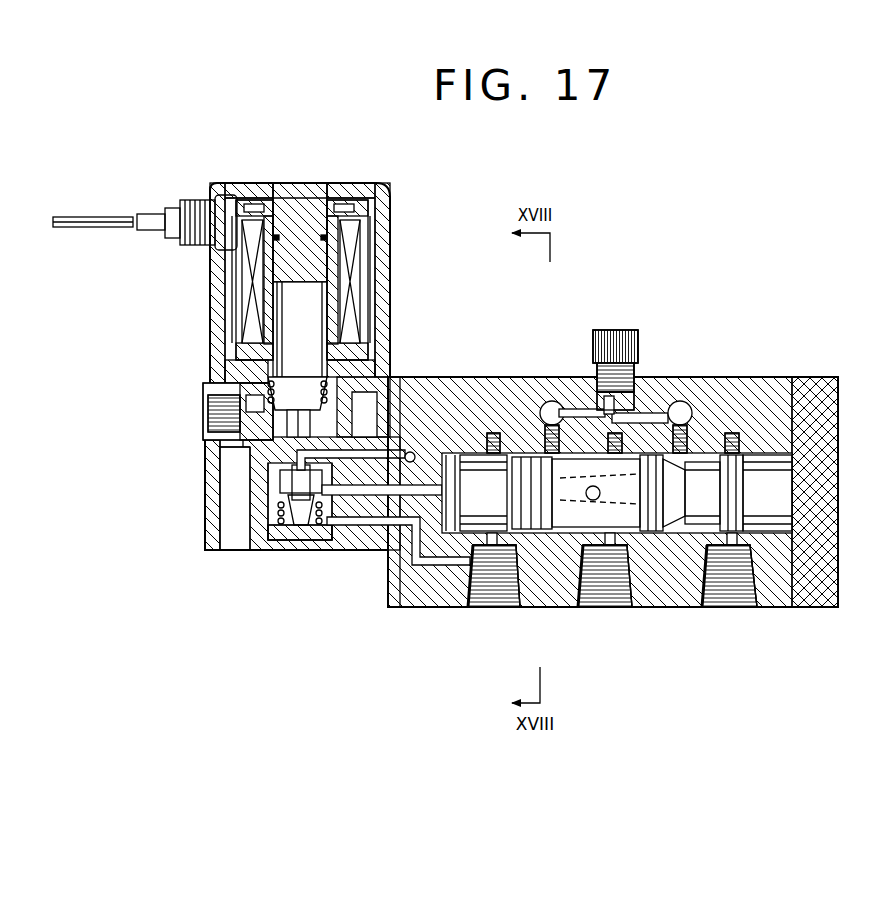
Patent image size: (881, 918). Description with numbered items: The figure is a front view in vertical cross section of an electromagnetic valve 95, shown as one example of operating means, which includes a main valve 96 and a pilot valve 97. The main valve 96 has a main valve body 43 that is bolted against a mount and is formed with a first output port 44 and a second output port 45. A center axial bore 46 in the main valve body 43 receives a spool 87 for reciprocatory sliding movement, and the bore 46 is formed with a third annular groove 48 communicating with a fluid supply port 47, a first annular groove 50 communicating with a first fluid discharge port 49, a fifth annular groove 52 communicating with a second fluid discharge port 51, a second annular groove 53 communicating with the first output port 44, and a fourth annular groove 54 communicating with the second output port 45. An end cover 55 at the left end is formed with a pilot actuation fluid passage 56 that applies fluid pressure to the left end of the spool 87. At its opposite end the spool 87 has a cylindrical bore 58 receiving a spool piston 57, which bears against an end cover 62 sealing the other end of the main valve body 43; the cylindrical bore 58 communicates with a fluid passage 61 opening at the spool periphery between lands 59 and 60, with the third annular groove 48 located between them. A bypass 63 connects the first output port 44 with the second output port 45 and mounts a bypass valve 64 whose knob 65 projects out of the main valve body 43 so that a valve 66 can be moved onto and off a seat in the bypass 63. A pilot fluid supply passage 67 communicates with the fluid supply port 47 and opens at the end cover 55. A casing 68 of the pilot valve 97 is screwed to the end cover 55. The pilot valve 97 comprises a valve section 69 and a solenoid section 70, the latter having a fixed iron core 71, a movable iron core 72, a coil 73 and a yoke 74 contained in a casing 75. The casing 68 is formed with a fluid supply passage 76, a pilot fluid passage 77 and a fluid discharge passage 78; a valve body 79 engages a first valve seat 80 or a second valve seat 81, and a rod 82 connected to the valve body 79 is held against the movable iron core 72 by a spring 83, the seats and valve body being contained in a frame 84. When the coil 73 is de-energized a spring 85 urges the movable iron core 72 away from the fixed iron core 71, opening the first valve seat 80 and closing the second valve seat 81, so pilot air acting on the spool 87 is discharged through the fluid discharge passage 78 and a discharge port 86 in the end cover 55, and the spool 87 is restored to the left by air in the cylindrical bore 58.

The main valve body 43 is at (672, 600).
The first output port 44 is at (690, 412).
The second output port 45 is at (530, 400).
The center axial bore 46 is at (650, 605).
The fluid supply port 47 is at (632, 600).
The third annular groove 48 is at (625, 603).
The first fluid discharge port 49 is at (745, 603).
The first annular groove 50 is at (736, 432).
The second fluid discharge port 51 is at (497, 600).
The fifth annular groove 52 is at (468, 400).
The second annular groove 53 is at (690, 600).
The fourth annular groove 54 is at (562, 585).
The end cover 55 is at (386, 602).
The pilot actuation fluid passage 56 is at (455, 492).
The spool piston 57 is at (790, 477).
The cylindrical bore 58 is at (705, 470).
The land 59 is at (668, 402).
The land 60 is at (505, 402).
The fluid passage 61 is at (612, 470).
The end cover 62 is at (814, 392).
The bypass 63 is at (580, 405).
The bypass valve 64 is at (632, 328).
The knob 65 is at (615, 328).
The valve 66 is at (633, 392).
The pilot fluid supply passage 67 is at (412, 606).
The casing 68 is at (204, 525).
The valve section 69 is at (213, 556).
The solenoid section 70 is at (258, 180).
The fixed iron core 71 is at (297, 196).
The movable iron core 72 is at (292, 333).
The coil 73 is at (356, 252).
The yoke 74 is at (268, 298).
The casing 75 is at (392, 272).
The fluid supply passage 76 is at (350, 545).
The pilot fluid passage 77 is at (370, 520).
The fluid discharge passage 78 is at (297, 407).
The valve body 79 is at (290, 514).
The first valve seat 80 is at (300, 541).
The second valve seat 81 is at (283, 487).
The rod 82 is at (295, 470).
The spring 83 is at (292, 543).
The frame 84 is at (272, 541).
The spring 85 is at (262, 392).
The discharge port 86 is at (412, 400).
The spool 87 is at (460, 567).
The electromagnetic valve 95 is at (460, 258).
The main valve 96 is at (555, 376).
The pilot valve 97 is at (203, 487).